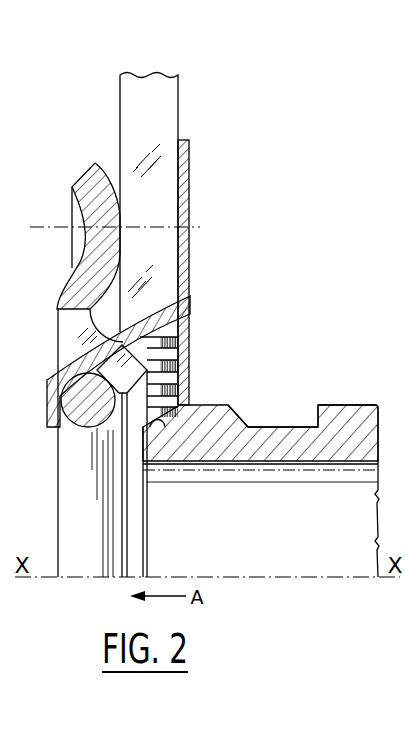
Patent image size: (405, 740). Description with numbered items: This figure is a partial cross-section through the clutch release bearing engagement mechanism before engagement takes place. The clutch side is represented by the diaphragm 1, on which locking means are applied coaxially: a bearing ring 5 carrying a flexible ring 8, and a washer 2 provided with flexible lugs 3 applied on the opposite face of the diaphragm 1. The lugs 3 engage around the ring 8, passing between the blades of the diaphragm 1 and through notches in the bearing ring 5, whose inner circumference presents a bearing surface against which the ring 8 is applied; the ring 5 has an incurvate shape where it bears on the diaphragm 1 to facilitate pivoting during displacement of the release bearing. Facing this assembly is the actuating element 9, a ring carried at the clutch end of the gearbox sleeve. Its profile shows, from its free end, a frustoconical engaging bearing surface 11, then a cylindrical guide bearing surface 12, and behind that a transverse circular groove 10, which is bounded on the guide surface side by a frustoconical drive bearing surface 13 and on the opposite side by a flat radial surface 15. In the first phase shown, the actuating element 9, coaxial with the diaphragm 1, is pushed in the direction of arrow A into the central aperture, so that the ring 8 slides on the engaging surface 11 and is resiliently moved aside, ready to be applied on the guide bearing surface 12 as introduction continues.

The diaphragm 1 is at (165, 92).
The washer 2 is at (192, 175).
The flexible lugs 3 is at (53, 396).
The bearing ring 5 is at (97, 246).
The flexible ring 8 is at (70, 493).
The actuating element 9 is at (347, 398).
The circular groove 10 is at (288, 420).
The frustoconical engaging bearing surface 11 is at (162, 417).
The cylindrical guide bearing surface 12 is at (208, 405).
The frustoconical drive bearing surface 13 is at (248, 425).
The flat radial surface 15 is at (317, 420).